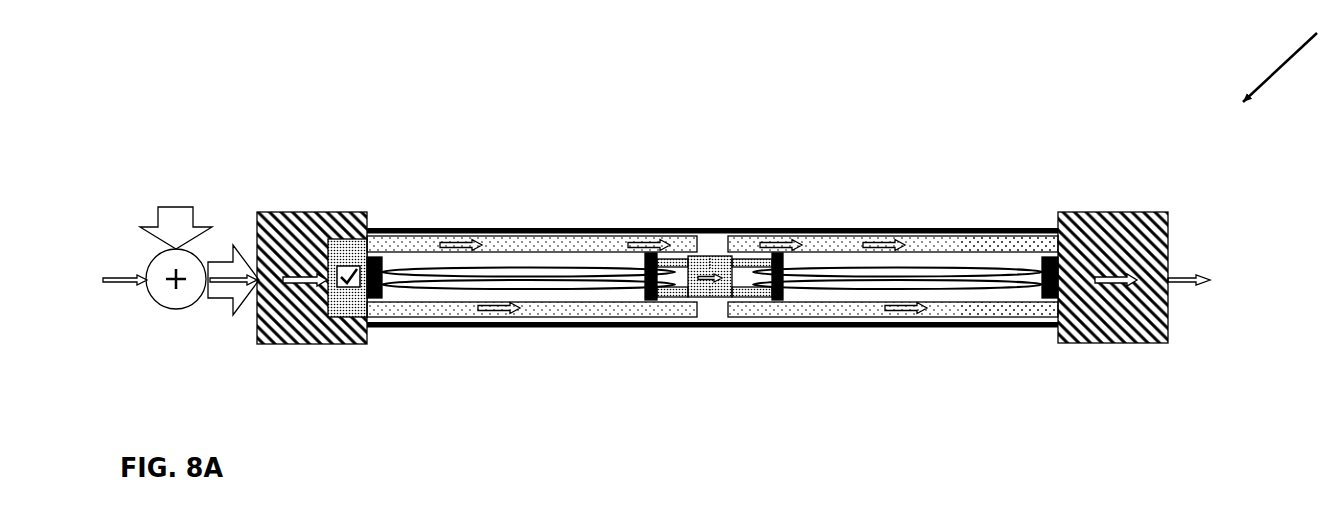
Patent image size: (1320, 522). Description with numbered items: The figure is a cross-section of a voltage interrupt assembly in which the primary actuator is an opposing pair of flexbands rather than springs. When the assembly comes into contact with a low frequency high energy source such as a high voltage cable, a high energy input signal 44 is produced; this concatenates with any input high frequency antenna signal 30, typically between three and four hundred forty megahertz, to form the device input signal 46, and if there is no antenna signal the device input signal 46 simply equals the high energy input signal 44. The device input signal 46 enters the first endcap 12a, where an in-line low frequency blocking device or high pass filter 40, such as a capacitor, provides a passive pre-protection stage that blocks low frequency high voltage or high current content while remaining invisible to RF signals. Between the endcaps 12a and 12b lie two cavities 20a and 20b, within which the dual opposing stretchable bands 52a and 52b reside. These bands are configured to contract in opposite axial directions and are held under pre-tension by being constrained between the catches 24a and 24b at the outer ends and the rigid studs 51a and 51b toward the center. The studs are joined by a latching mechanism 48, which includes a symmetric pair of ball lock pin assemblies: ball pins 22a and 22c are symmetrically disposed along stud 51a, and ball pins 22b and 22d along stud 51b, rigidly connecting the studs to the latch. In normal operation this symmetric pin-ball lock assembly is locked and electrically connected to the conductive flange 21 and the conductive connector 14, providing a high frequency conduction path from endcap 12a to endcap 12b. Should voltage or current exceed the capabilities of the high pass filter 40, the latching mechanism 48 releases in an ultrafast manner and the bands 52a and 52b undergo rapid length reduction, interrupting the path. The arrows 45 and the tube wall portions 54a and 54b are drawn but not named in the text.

The endcap 12a is at (276, 198).
The endcap 12b is at (1170, 230).
The conductive connector 14 is at (437, 306).
The cavity 20a is at (592, 256).
The cavity 20b is at (848, 260).
The conductive flange 21 is at (1027, 309).
The ball pin 22a is at (681, 256).
The ball pin 22b is at (745, 256).
The ball pin 22c is at (683, 300).
The ball pin 22d is at (745, 300).
The catch 24a is at (372, 253).
The catch 24b is at (1050, 253).
The high frequency antenna signal 30 is at (110, 281).
The high pass filter 40 is at (346, 245).
The high energy input signal 44 is at (176, 213).
The flow direction arrows 45 is at (457, 254).
The device input signal 46 is at (226, 303).
The latching mechanism 48 is at (715, 253).
The rigid stud 51a is at (650, 303).
The rigid stud 51b is at (778, 303).
The stretchable band 52a is at (491, 267).
The stretchable band 52b is at (931, 267).
The first tube bottom wall 54a is at (577, 305).
The second tube bottom wall 54b is at (828, 305).